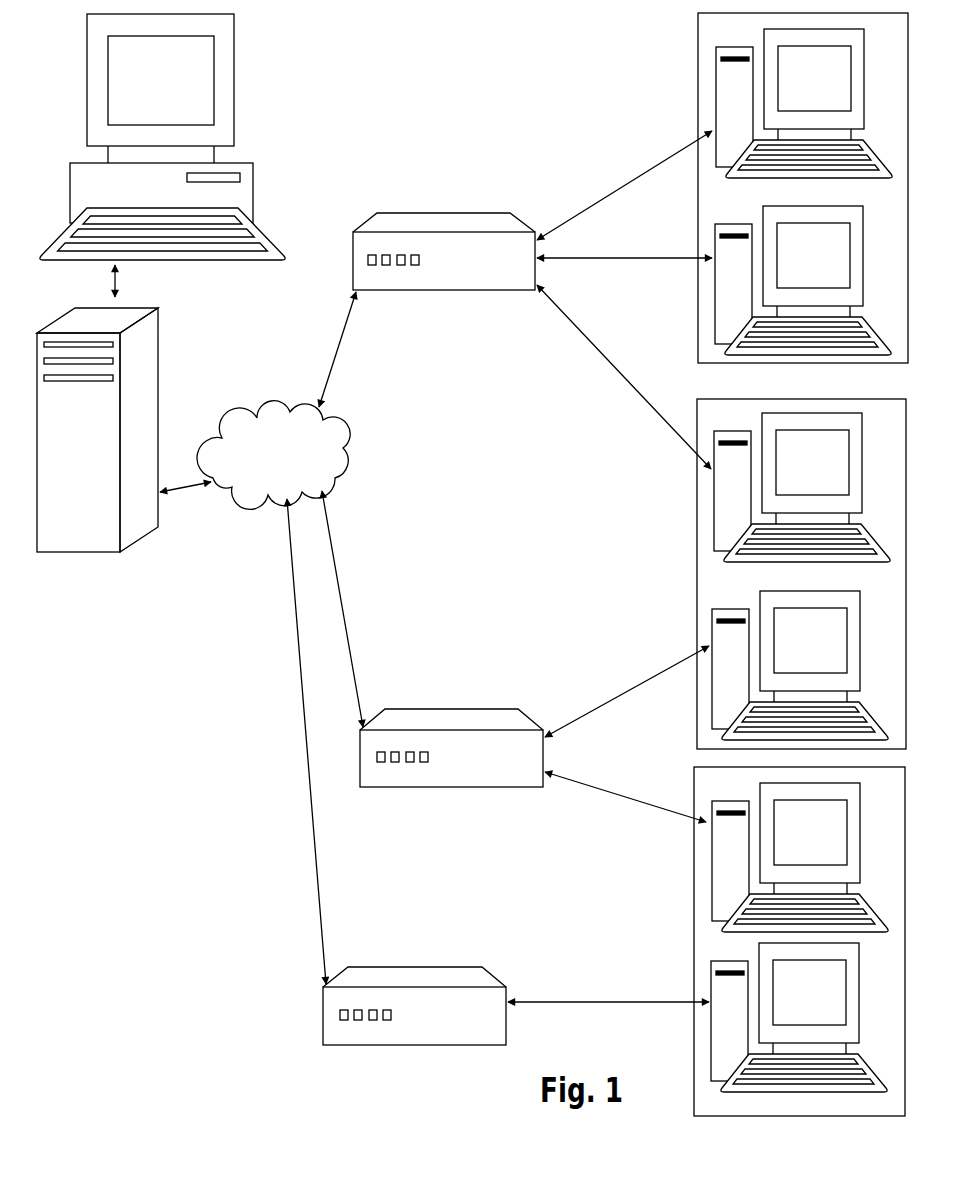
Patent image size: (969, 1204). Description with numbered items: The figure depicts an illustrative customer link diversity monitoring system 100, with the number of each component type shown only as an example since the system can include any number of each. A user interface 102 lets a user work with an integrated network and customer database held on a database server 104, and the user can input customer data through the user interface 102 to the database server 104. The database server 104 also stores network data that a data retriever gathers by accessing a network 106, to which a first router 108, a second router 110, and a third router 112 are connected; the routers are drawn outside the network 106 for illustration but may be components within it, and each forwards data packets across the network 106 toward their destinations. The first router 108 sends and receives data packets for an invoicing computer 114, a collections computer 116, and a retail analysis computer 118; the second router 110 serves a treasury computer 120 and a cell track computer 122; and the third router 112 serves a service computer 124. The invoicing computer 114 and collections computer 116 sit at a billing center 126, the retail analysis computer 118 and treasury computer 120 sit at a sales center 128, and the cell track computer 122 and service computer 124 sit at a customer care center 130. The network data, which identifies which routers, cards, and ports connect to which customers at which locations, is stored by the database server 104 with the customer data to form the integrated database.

The customer link diversity monitoring system 100 is at (401, 28).
The user interface 102 is at (238, 262).
The database server 104 is at (97, 555).
The network 106 is at (273, 502).
The first router 108 is at (413, 288).
The second router 110 is at (388, 788).
The third router 112 is at (345, 1043).
The invoicing computer 114 is at (710, 103).
The collections computer 116 is at (708, 287).
The retail analysis computer 118 is at (717, 522).
The treasury computer 120 is at (717, 670).
The cell track computer 122 is at (705, 845).
The service computer 124 is at (715, 1012).
The billing center 126 is at (700, 193).
The sales center 128 is at (702, 600).
The customer care center 130 is at (700, 903).